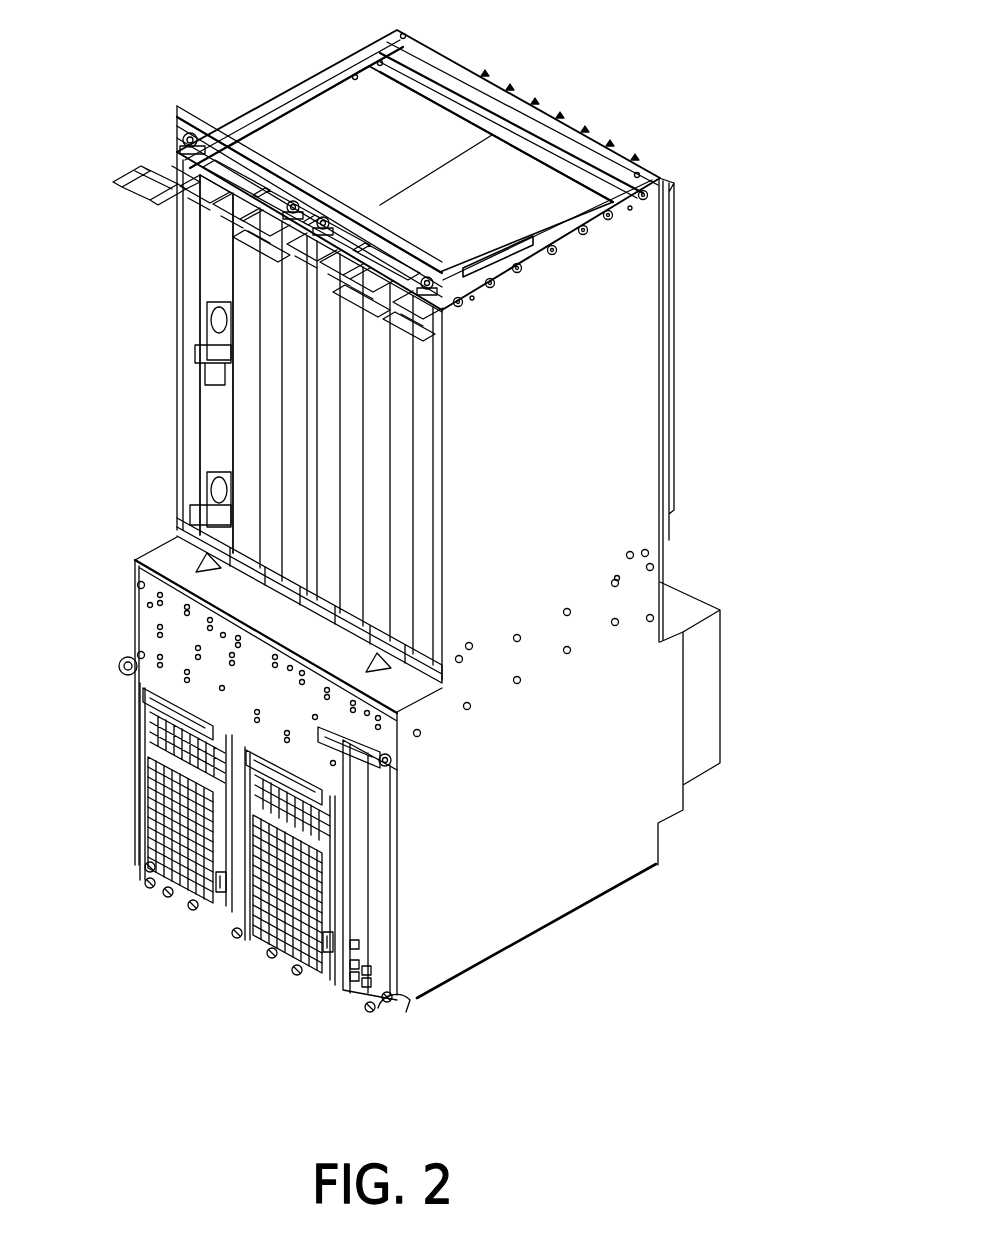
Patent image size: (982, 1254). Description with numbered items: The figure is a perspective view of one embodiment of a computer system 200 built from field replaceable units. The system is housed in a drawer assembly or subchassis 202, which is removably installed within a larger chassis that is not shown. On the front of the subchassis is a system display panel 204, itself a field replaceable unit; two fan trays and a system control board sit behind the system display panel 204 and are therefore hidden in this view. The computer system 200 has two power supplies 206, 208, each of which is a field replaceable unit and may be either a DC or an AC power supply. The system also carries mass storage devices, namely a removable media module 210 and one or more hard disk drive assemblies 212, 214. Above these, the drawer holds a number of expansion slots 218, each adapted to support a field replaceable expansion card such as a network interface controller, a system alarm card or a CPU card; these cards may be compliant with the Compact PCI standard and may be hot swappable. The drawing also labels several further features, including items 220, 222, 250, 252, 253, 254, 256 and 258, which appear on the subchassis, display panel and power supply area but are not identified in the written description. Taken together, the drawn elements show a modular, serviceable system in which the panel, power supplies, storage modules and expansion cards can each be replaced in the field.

The computer system 200 is at (588, 112).
The drawer assembly or subchassis 202 is at (562, 732).
The system display panel 204 is at (155, 625).
The power supply 206 is at (160, 830).
The power supply 208 is at (273, 913).
The removable media module 210 is at (377, 907).
The hard disk drive assembly 212 is at (213, 278).
The hard disk drive assembly 214 is at (213, 420).
The expansion slots 218 is at (247, 365).
The handle 220 is at (132, 175).
The thumbscrew 222 is at (188, 138).
The handle 250 is at (150, 717).
The latch 252 is at (220, 883).
The latch 253 is at (327, 943).
The screws 254 is at (178, 892).
The screws 256 is at (297, 972).
The handle 258 is at (405, 997).